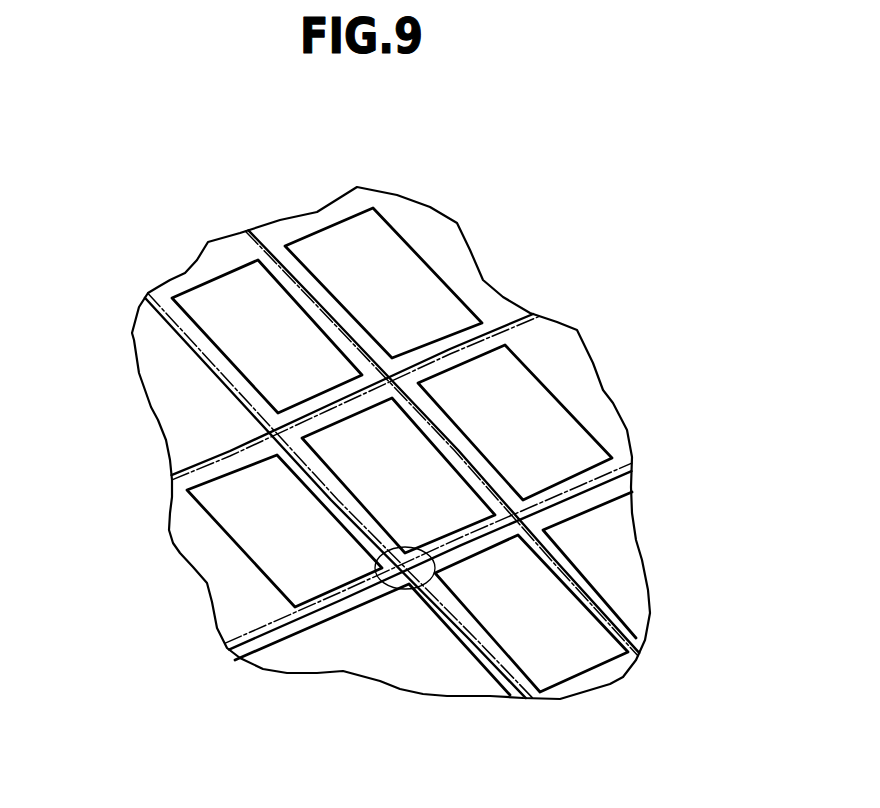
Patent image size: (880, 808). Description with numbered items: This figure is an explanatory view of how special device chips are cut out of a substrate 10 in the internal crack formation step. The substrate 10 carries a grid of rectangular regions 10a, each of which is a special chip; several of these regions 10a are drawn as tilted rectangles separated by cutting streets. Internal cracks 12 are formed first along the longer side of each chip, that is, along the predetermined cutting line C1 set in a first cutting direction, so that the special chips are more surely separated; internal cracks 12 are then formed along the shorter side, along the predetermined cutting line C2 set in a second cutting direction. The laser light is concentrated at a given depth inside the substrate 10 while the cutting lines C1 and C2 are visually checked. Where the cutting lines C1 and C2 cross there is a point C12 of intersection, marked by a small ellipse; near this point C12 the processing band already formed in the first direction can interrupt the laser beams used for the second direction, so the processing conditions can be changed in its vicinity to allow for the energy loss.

The substrate 10 is at (410, 200).
The rectangular region 10a is at (233, 297).
The internal crack 12 is at (272, 252).
The predetermined cutting line C1 is at (312, 272).
The predetermined cutting line C2 is at (508, 312).
The point of intersection C12 is at (406, 590).